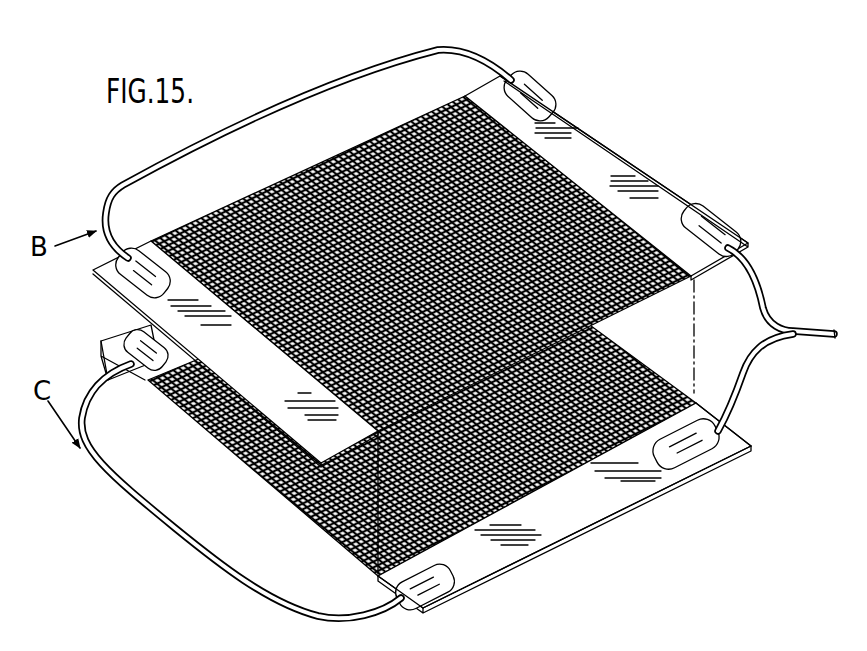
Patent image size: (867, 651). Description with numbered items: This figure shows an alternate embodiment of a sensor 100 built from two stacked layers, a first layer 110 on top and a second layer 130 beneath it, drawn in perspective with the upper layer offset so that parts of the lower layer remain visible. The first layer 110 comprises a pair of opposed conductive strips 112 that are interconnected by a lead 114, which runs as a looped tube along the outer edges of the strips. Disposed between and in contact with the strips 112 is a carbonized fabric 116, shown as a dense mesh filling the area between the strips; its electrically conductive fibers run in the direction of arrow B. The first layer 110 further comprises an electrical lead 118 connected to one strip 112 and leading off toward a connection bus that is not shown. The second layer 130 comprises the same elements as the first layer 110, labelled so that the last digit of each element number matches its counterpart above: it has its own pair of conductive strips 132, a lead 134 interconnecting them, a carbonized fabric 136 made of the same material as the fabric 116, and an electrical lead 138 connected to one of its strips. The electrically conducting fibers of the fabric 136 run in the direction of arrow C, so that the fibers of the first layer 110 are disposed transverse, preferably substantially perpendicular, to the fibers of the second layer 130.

The sensor 100 is at (604, 105).
The first layer 110 is at (653, 160).
The conductive strips 112 is at (591, 164).
The lead 114 is at (303, 90).
The carbonized fabric 116 is at (253, 188).
The electrical lead 118 is at (753, 272).
The second layer 130 is at (610, 517).
The conductive strips 132 is at (574, 507).
The lead 134 is at (152, 512).
The carbonized fabric 136 is at (273, 497).
The electrical lead 138 is at (745, 355).